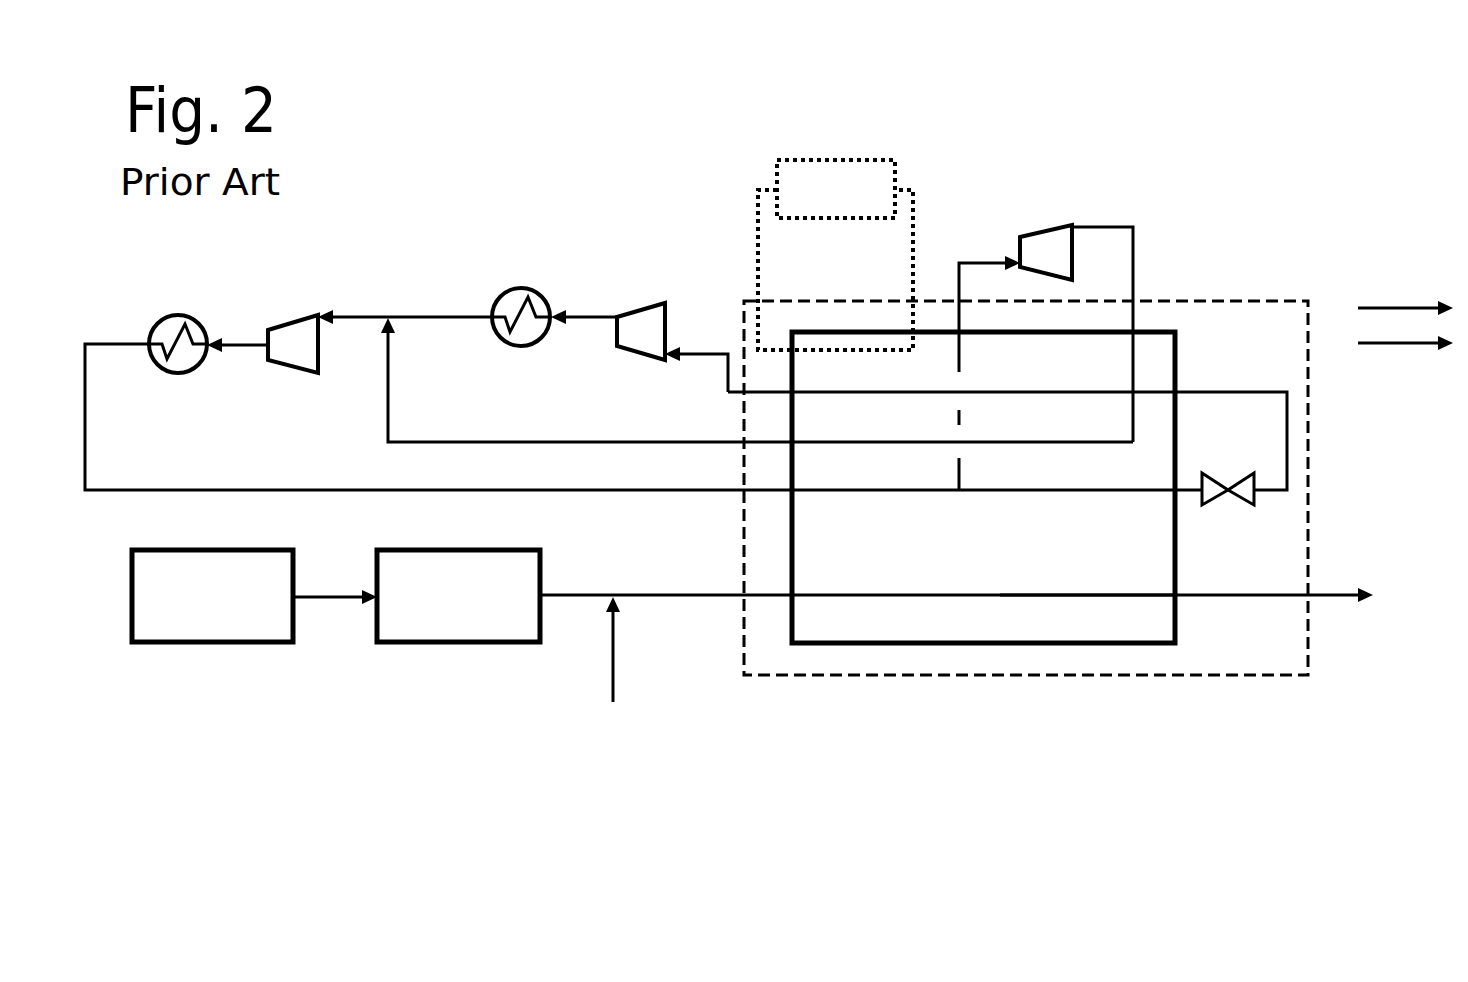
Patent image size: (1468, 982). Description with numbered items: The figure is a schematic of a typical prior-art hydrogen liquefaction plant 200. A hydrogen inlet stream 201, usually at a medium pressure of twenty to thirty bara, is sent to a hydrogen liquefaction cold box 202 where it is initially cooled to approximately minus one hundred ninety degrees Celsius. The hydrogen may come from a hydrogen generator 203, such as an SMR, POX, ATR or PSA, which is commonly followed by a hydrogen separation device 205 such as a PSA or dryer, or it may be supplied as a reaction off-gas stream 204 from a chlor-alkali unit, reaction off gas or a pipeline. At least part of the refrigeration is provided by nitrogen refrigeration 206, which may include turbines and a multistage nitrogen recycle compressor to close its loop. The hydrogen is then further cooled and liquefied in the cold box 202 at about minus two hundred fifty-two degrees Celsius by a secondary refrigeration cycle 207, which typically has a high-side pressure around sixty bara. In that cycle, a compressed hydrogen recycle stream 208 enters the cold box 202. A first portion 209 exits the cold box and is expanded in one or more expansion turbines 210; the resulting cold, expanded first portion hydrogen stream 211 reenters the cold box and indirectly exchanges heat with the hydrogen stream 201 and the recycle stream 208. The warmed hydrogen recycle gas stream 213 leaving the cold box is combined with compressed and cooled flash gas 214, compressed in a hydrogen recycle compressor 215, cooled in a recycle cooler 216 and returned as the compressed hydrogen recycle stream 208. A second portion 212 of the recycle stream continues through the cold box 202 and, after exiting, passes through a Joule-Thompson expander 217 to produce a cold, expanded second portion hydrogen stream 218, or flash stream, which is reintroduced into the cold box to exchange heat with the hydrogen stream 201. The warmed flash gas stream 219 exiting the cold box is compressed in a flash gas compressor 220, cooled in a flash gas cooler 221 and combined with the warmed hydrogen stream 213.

The hydrogen liquefaction plant 200 is at (1155, 692).
The hydrogen inlet stream 201 is at (858, 341).
The hydrogen liquefaction cold box 202 is at (983, 487).
The hydrogen generator 203 is at (254, 596).
The reaction off-gas stream 204 is at (617, 670).
The hydrogen separation device 205 is at (458, 596).
The nitrogen refrigeration 206 is at (835, 255).
The secondary refrigeration cycle 207 is at (1157, 196).
The compressed hydrogen recycle stream 208 is at (643, 417).
The first portion of compressed hydrogen recycle stream 209 is at (987, 360).
The expansion turbine 210 is at (1046, 235).
The cold, expanded first portion hydrogen stream 211 is at (1128, 334).
The second portion of compressed hydrogen recycle stream 212 is at (1087, 548).
The warmed hydrogen recycle gas stream 213 is at (757, 380).
The compressed and cooled flash gas 214 is at (405, 301).
The hydrogen recycle compressor 215 is at (262, 325).
The recycle cooler 216 is at (178, 362).
The Joule-Thompson expander 217 is at (1228, 503).
The cold, expanded second portion hydrogen stream 218 is at (1007, 422).
The warmed flash gas stream 219 is at (696, 369).
The flash gas compressor 220 is at (608, 311).
The flash gas cooler 221 is at (521, 336).